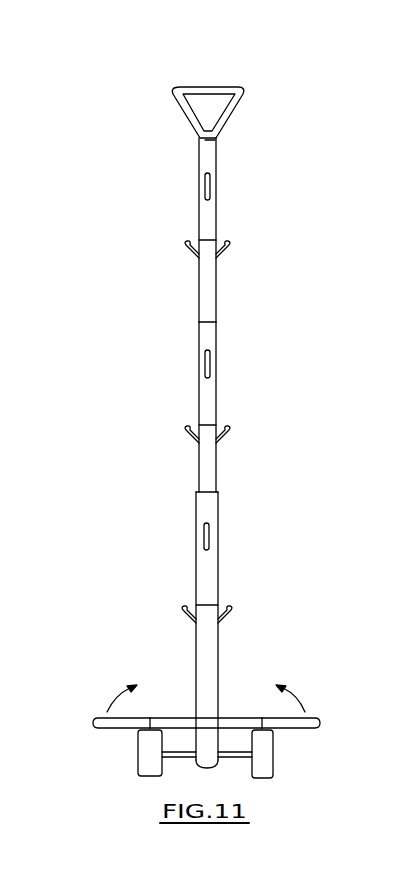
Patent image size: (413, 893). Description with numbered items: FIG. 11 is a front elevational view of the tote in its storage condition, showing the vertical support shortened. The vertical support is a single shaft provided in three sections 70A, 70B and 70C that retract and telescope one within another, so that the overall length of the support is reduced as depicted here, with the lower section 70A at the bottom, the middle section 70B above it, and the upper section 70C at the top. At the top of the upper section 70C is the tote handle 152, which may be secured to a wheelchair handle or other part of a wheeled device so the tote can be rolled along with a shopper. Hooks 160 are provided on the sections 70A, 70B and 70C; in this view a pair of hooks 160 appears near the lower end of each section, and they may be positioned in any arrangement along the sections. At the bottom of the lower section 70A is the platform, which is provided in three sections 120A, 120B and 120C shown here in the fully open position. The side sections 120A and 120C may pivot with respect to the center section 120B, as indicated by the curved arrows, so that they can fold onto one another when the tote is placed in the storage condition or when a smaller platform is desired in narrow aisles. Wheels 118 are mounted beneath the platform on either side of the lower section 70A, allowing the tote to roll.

The tote handle 152 is at (211, 87).
The upper shaft section 70C is at (217, 213).
The middle shaft section 70B is at (211, 400).
The lower shaft section 70A is at (218, 555).
The hooks 160 is at (203, 253).
The platform side section 120A is at (96, 718).
The platform center section 120B is at (229, 718).
The platform side section 120C is at (312, 718).
The wheels 118 is at (138, 752).